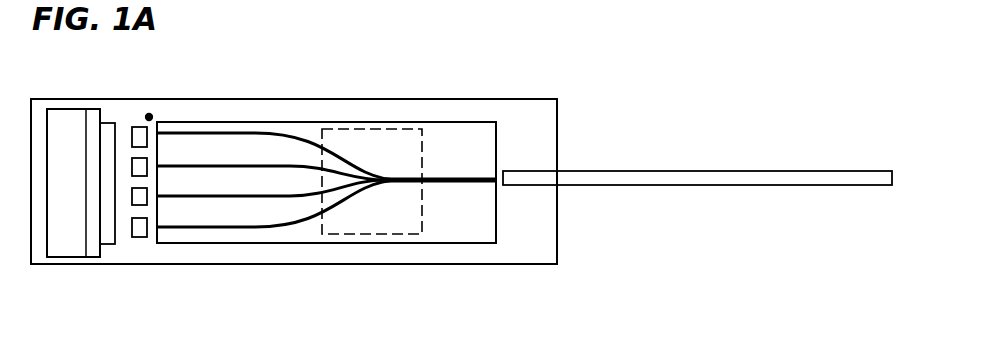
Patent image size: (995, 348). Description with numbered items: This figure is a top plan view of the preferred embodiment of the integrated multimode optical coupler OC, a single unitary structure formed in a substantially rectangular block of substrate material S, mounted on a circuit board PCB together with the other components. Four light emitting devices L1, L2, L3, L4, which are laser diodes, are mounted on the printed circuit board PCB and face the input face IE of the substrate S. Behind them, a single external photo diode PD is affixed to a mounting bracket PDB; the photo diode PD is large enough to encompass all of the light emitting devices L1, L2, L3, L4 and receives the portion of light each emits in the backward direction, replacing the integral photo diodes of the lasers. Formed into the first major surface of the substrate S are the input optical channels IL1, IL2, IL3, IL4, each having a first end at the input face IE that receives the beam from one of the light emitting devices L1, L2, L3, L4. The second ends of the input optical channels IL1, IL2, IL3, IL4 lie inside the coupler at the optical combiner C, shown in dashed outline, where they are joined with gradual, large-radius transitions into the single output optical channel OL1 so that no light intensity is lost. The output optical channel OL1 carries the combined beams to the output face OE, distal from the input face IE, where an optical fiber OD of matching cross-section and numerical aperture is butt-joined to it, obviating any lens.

The printed circuit board PCB is at (337, 98).
The mounting bracket PDB is at (95, 258).
The photo diode PD is at (109, 130).
The light emitting device L1 is at (134, 127).
The light emitting device L2 is at (132, 168).
The light emitting device L3 is at (137, 196).
The light emitting device L4 is at (142, 239).
The integrated multimode optical coupler OC is at (442, 122).
The substrate S is at (477, 125).
The input face IE is at (150, 112).
The optical combiner C is at (363, 127).
The input optical channel IL1 is at (230, 133).
The input optical channel IL2 is at (265, 166).
The input optical channel IL3 is at (217, 201).
The input optical channel IL4 is at (265, 233).
The output optical channel OL1 is at (458, 176).
The output face OE is at (512, 222).
The optical fiber OD is at (742, 176).